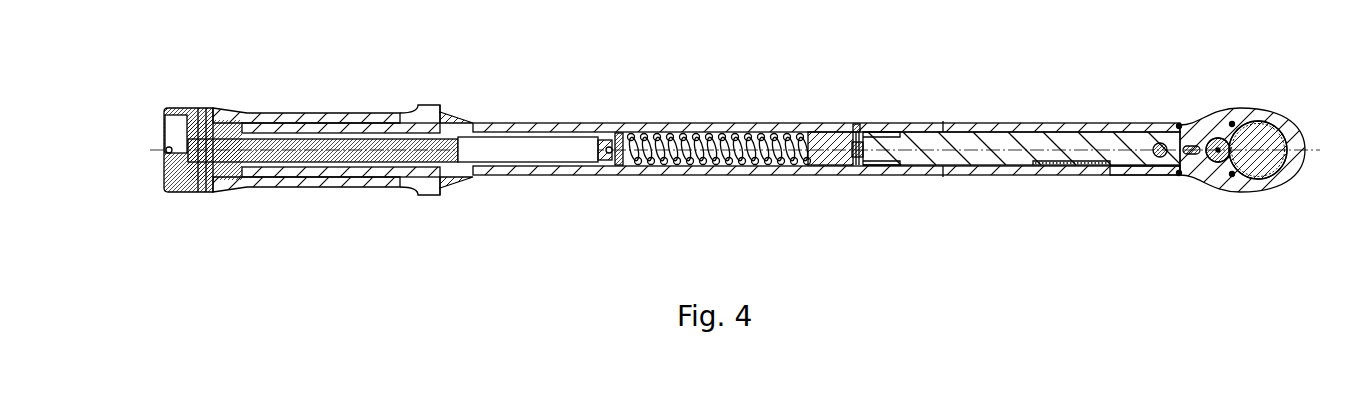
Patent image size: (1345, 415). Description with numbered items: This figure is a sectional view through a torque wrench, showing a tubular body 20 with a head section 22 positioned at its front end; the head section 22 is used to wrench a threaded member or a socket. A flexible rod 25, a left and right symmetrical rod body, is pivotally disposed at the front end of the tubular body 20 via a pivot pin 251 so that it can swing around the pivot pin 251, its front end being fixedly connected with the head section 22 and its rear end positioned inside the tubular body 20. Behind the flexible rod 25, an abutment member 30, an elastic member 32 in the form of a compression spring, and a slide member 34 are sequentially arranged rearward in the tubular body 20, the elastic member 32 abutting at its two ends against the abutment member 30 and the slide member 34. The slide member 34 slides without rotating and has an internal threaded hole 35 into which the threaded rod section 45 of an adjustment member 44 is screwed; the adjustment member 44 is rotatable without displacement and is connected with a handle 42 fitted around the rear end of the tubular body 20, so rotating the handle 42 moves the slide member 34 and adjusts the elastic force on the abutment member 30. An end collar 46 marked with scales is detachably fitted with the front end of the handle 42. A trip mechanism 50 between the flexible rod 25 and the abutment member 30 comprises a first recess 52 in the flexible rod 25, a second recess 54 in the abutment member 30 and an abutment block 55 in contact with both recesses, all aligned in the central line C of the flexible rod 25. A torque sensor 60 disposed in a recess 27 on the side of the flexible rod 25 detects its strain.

The tubular body 20 is at (1027, 123).
The head section 22 is at (1258, 108).
The flexible rod 25 is at (1014, 162).
The pivot pin 251 is at (1162, 157).
The recess 27 is at (1078, 165).
The abutment member 30 is at (813, 132).
The elastic member 32 is at (703, 165).
The slide member 34 is at (452, 178).
The threaded hole 35 is at (408, 177).
The handle 42 is at (283, 112).
The adjustment member 44 is at (240, 170).
The threaded rod section 45 is at (369, 165).
The end collar 46 is at (448, 108).
The trip mechanism 50 is at (857, 124).
The first recess 52 is at (872, 167).
The second recess 54 is at (852, 154).
The abutment block 55 is at (857, 165).
The torque sensor 60 is at (1087, 165).
The central line C is at (972, 150).